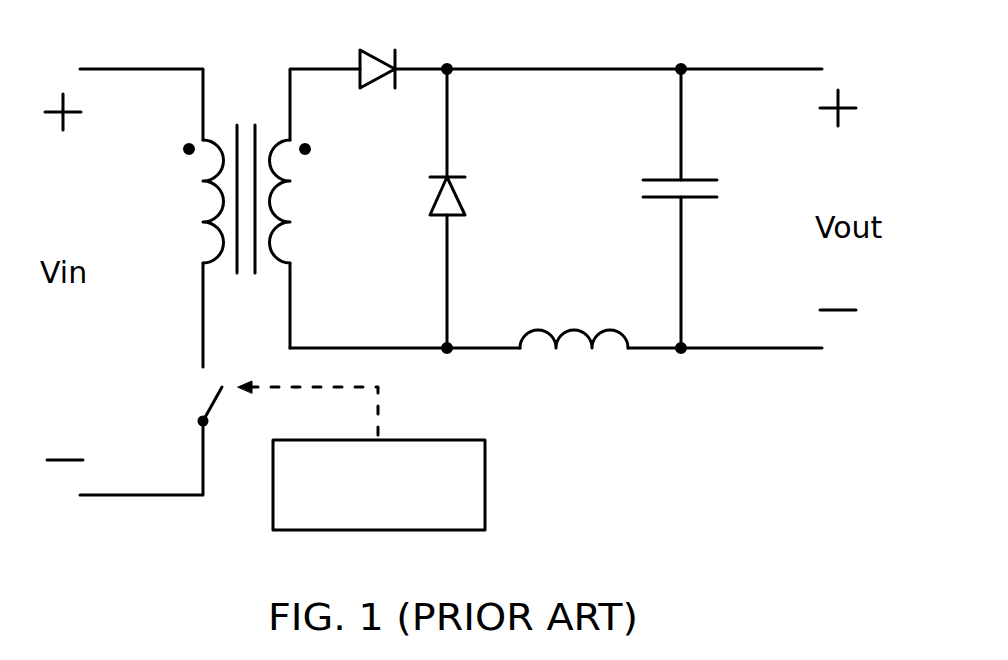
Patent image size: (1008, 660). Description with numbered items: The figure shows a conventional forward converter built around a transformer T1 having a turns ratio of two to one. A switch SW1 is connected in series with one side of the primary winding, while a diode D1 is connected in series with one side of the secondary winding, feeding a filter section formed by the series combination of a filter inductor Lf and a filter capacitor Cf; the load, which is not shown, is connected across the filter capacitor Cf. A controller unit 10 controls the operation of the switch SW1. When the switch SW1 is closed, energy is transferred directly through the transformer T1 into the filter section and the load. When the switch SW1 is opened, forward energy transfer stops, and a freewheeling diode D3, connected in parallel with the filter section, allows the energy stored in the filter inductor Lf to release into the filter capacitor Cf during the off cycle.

The controller unit 10 is at (485, 474).
The transformer T1 is at (241, 142).
The diode D1 is at (388, 48).
The freewheeling diode D3 is at (474, 192).
The filter capacitor Cf is at (702, 187).
The filter inductor Lf is at (574, 320).
The switch SW1 is at (176, 409).